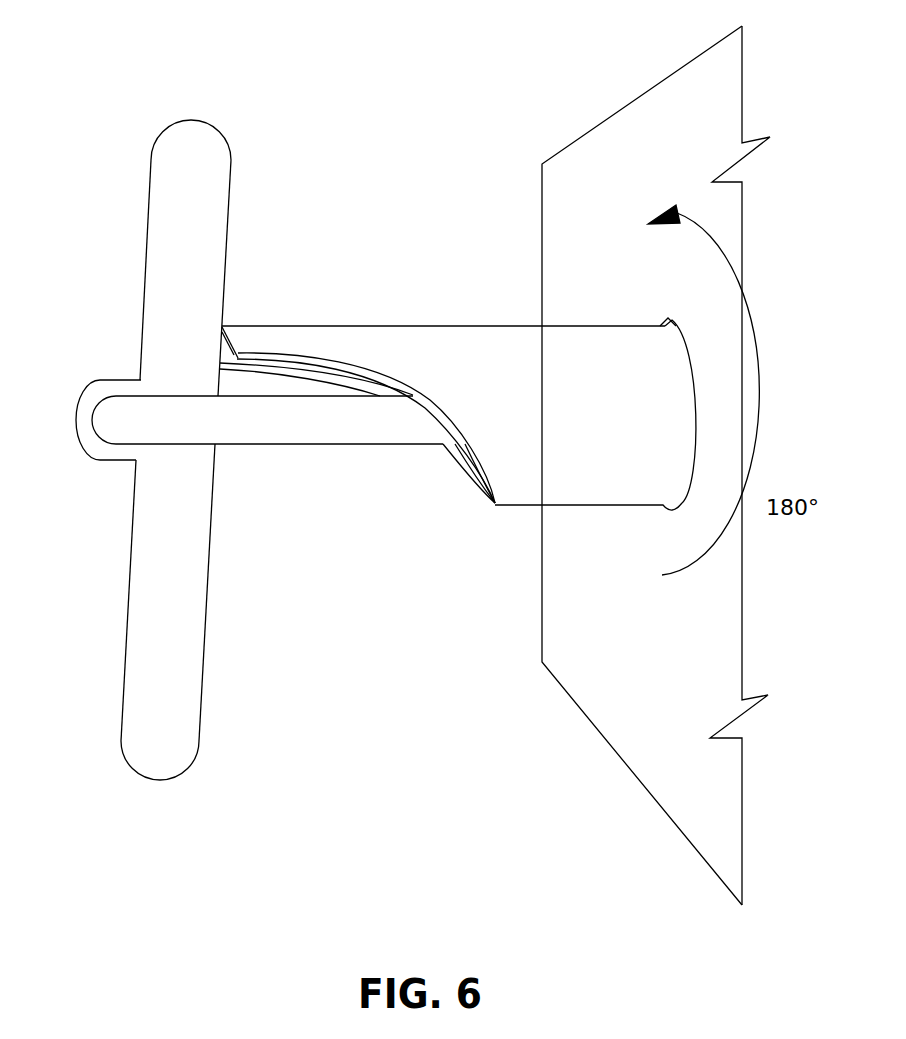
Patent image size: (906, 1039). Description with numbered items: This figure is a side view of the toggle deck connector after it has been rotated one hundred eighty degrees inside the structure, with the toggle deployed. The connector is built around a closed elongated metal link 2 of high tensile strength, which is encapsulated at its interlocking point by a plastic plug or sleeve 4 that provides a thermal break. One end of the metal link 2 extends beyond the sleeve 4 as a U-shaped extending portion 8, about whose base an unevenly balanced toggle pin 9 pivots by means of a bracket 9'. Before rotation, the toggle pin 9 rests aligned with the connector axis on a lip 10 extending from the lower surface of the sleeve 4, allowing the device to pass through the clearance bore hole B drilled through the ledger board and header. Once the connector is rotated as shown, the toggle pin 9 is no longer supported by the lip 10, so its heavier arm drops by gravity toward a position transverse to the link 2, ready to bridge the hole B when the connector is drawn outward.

The closed elongated metal link 2 is at (305, 417).
The plastic plug or sleeve 4 is at (604, 429).
The U-shaped extending portion 8 is at (113, 418).
The toggle pin 9 is at (210, 450).
The bracket 9' is at (108, 478).
The lip 10 is at (300, 326).
The clearance bore hole B is at (668, 320).